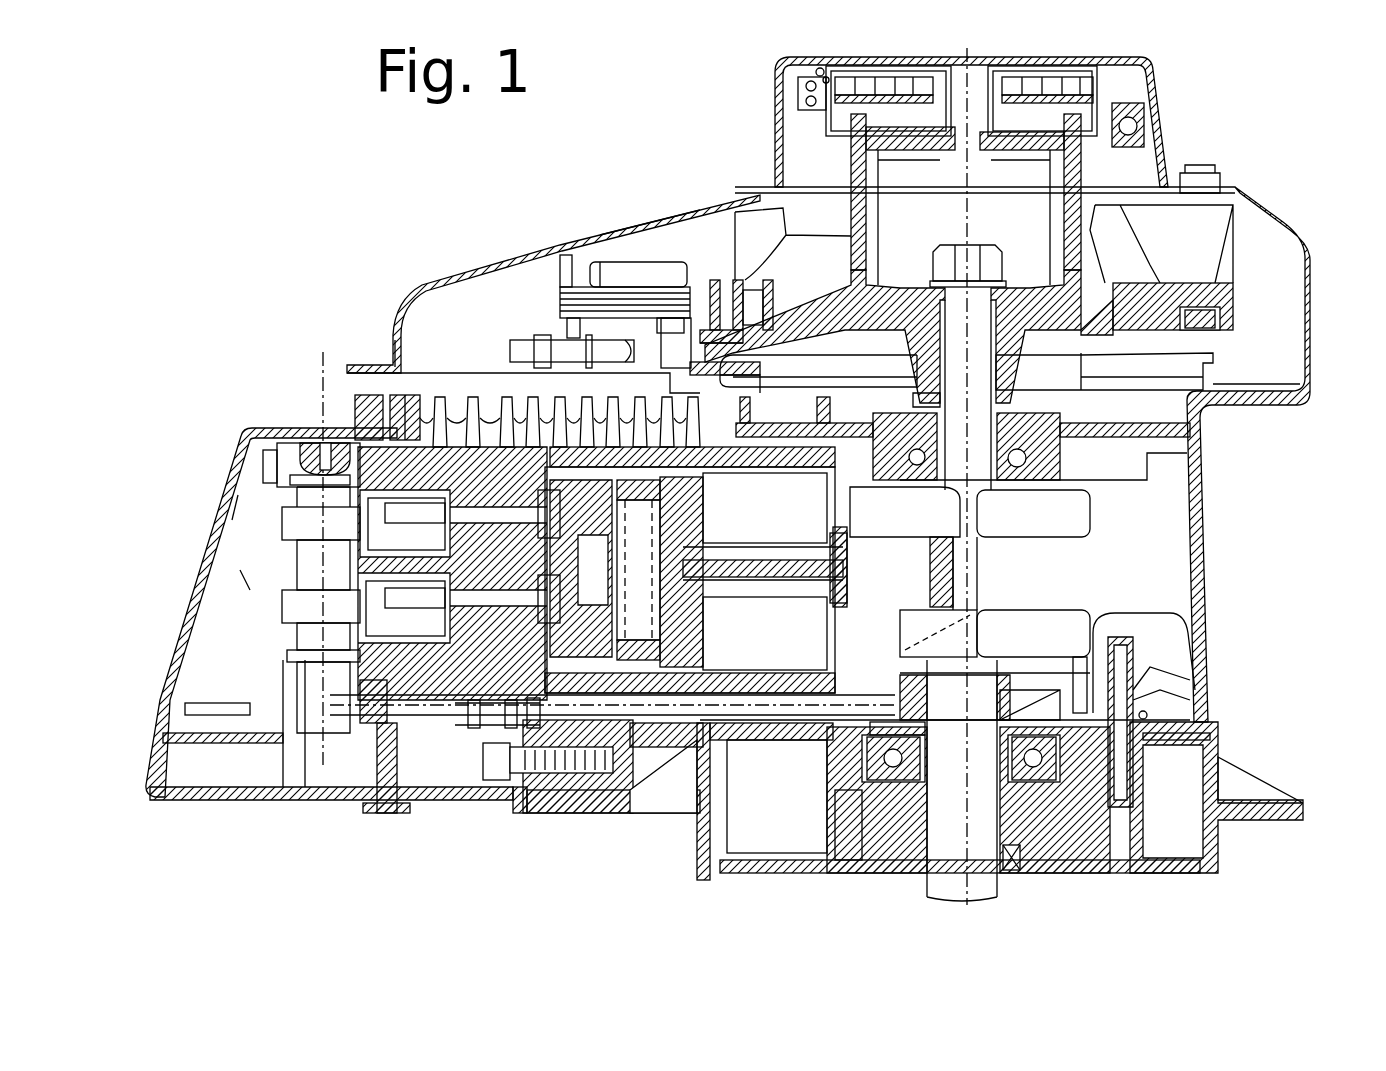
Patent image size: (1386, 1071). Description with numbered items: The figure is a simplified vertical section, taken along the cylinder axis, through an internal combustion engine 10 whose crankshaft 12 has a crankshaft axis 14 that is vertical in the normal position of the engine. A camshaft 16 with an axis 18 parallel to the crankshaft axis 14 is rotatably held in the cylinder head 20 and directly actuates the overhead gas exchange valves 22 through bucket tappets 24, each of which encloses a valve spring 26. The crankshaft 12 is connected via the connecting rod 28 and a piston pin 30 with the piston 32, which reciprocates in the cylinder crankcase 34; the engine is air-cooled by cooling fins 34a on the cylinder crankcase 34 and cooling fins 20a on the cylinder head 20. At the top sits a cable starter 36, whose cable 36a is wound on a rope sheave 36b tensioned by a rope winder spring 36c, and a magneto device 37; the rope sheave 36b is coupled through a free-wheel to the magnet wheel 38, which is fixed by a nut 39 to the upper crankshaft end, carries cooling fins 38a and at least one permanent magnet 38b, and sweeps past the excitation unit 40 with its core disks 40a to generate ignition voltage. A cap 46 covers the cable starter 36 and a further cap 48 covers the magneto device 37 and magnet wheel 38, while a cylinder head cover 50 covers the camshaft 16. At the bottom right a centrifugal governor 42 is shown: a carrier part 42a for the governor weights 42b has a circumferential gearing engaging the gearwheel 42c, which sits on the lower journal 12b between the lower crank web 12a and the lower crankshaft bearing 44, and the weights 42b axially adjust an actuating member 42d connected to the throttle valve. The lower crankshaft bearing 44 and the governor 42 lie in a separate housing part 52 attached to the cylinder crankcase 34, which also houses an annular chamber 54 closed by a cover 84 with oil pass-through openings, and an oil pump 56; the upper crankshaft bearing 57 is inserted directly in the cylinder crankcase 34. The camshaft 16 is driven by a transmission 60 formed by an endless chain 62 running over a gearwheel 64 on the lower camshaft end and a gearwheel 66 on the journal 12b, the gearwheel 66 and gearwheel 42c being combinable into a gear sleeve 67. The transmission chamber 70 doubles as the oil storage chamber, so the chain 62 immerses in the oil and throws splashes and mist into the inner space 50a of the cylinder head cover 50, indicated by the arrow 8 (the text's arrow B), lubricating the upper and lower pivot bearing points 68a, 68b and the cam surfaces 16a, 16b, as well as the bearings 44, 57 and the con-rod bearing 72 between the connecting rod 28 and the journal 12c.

The belt 8 is at (245, 582).
The internal combustion engine 10 is at (402, 252).
The crankshaft 12 is at (1078, 510).
The lower crank web 12a is at (1040, 615).
The lower journal 12b is at (930, 895).
The journal 12c is at (955, 560).
The crankshaft axis 14 is at (985, 200).
The camshaft 16 is at (305, 450).
The cam surface 16a is at (283, 605).
The cam surface 16b is at (283, 520).
The camshaft axis 18 is at (322, 360).
The cylinder head 20 is at (418, 395).
The cooling fins 20a is at (532, 398).
The gas exchange valves 22 is at (482, 560).
The bucket tappets 24 is at (437, 600).
The valve spring 26 is at (396, 722).
The connecting rod 28 is at (760, 598).
The piston pin 30 is at (665, 625).
The piston 32 is at (700, 500).
The cylinder crankcase 34 is at (650, 792).
The cooling fins 34a is at (718, 320).
The cable starter 36 is at (798, 80).
The cable 36a is at (805, 100).
The rope sheave 36b is at (1146, 125).
The rope winder spring 36c is at (816, 68).
The magneto device 37 is at (603, 257).
The magnet wheel 38 is at (1237, 293).
The cooling fins 38a is at (790, 196).
The permanent magnet 38b is at (1213, 313).
The nut 39 is at (938, 262).
The excitation unit 40 is at (670, 258).
The core disks 40a is at (575, 262).
The centrifugal governor 42 is at (1162, 690).
The carrier part 42a is at (1142, 660).
The centrifugal governor weights 42b is at (1080, 660).
The gearwheel 42c is at (1050, 695).
The actuating member 42d is at (1212, 736).
The lower crankshaft bearing 44 is at (888, 762).
The cap 46 is at (1165, 96).
The further cap 48 is at (640, 224).
The cylinder head cover 50 is at (240, 436).
The inner space 50a is at (238, 500).
The housing part 52 is at (1078, 850).
The annular chamber 54 is at (1180, 862).
The oil pump 56 is at (855, 862).
The upper crankshaft bearing 57 is at (1030, 440).
The transmission 60 is at (490, 782).
The endless chain 62 is at (480, 727).
The gearwheel 64 is at (295, 735).
The gearwheel 66 is at (878, 735).
The gear sleeve 67 is at (1012, 872).
The upper pivot bearing point 68a is at (268, 455).
The lower pivot bearing point 68b is at (280, 660).
The transmission chamber 70 is at (540, 775).
The con-rod bearing 72 is at (860, 530).
The cover 84 is at (705, 825).